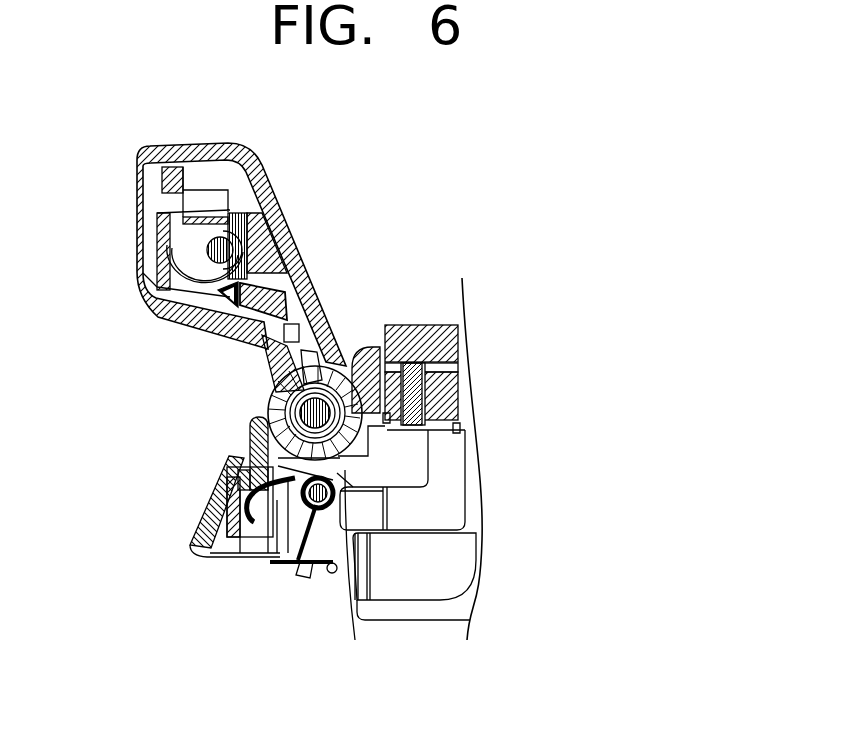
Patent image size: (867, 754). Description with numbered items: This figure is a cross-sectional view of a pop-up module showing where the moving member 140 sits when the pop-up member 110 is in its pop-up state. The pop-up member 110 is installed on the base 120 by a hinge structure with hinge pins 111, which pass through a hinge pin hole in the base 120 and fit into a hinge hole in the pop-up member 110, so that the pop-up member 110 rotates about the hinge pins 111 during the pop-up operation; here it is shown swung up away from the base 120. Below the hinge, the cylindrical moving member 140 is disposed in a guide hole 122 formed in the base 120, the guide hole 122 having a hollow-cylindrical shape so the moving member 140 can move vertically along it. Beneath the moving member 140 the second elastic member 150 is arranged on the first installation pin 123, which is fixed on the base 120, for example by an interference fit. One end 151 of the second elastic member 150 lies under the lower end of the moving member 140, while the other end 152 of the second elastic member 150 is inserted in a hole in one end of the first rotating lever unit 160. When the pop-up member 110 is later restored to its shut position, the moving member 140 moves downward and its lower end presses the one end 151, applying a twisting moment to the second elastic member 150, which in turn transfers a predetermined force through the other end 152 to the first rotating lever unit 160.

The pop-up member 110 is at (291, 197).
The hinge pins 111 is at (307, 400).
The base 120 is at (423, 610).
The guide hole 122 is at (248, 533).
The first installation pin 123 is at (318, 507).
The moving member 140 is at (247, 435).
The second elastic member 150 is at (313, 508).
The one end of the second elastic member 151 is at (240, 488).
The other end of the second elastic member 152 is at (297, 561).
The first rotating lever unit 160 is at (317, 568).